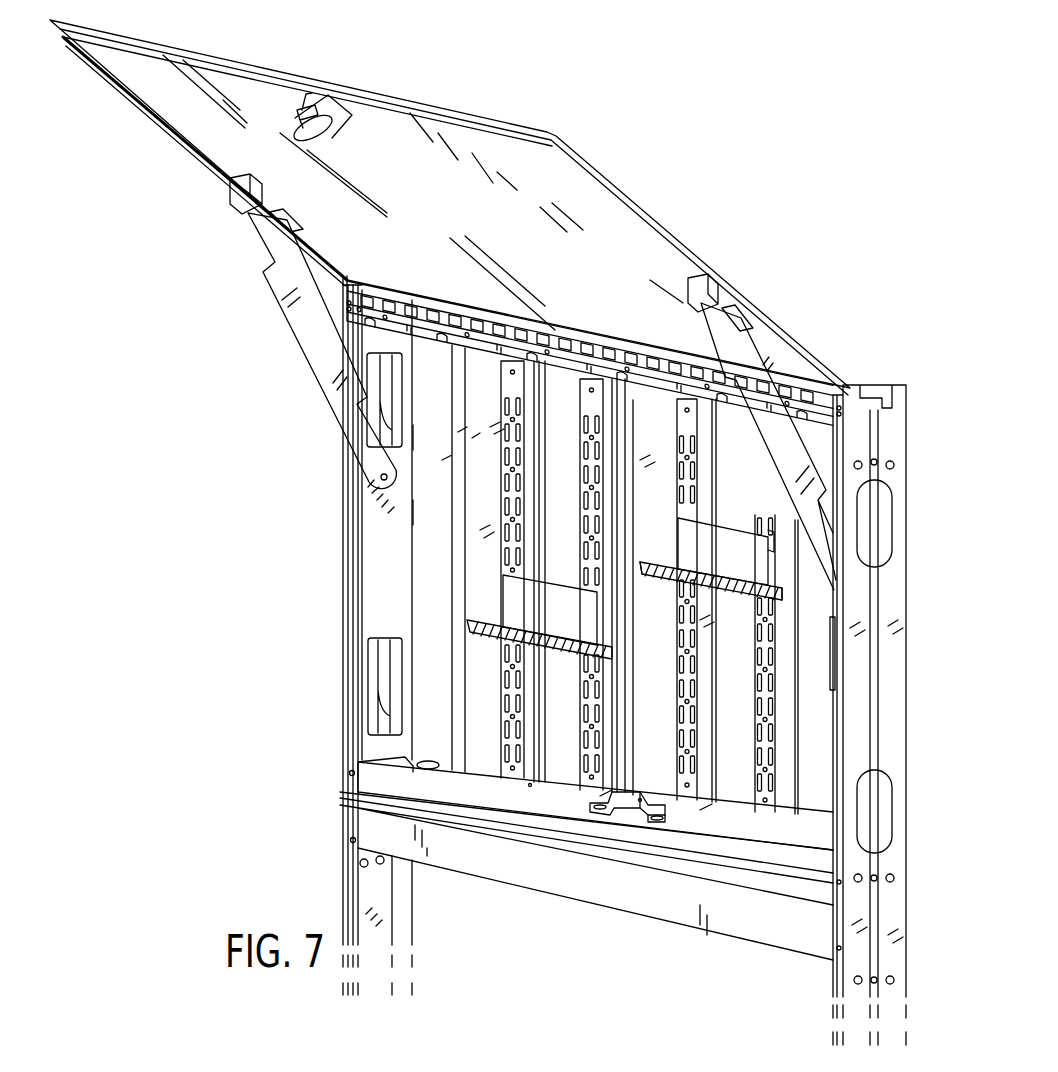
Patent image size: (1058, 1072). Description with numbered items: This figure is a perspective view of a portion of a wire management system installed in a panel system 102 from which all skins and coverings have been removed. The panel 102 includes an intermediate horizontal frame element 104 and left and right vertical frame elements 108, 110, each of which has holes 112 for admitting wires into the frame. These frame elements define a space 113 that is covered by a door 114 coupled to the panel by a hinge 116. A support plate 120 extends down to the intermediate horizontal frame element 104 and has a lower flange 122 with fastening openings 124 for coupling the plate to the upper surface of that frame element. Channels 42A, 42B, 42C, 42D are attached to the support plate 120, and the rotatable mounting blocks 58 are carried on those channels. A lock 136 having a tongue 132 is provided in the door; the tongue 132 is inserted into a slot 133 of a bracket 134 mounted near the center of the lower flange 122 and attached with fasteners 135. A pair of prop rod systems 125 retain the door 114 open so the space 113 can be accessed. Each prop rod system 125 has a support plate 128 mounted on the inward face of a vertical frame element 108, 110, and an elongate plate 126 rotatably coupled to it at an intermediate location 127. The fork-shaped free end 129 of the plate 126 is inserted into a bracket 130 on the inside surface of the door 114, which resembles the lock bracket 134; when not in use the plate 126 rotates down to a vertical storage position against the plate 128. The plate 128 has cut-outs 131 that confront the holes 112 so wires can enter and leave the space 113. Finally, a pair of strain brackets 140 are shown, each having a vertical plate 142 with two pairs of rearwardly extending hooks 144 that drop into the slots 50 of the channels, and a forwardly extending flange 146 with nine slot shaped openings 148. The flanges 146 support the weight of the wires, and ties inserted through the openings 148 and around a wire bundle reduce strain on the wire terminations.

The panel system 102 is at (345, 896).
The intermediate horizontal frame element 104 is at (550, 858).
The vertical frame element 108 is at (345, 597).
The vertical frame element 110 is at (902, 670).
The holes 112 is at (890, 768).
The space 113 is at (413, 592).
The door 114 is at (437, 222).
The hinge 116 is at (440, 330).
The support plate 120 is at (631, 622).
The lower flange 122 is at (745, 840).
The fastening openings 124 is at (702, 826).
The prop rod systems 125 is at (575, 412).
The elongate plate 126 is at (318, 338).
The intermediate location 127 is at (381, 477).
The support plate 128 is at (414, 508).
The free end 129 is at (253, 215).
The bracket 130 is at (283, 215).
The cut-outs 131 is at (414, 435).
The tongue 132 is at (300, 117).
The slot 133 is at (606, 805).
The bracket 134 is at (642, 798).
The fasteners 135 is at (635, 818).
The lock 136 is at (335, 110).
The strain brackets 140 is at (558, 575).
The vertical plate 142 is at (700, 560).
The hooks 144 is at (775, 540).
The flange 146 is at (735, 600).
The slot shaped openings 148 is at (657, 566).
The channel 42A is at (512, 680).
The channel 42B is at (587, 378).
The channel 42C is at (677, 402).
The channel 42D is at (768, 830).
The slots 50 is at (590, 556).
The mounting blocks 58 is at (493, 415).